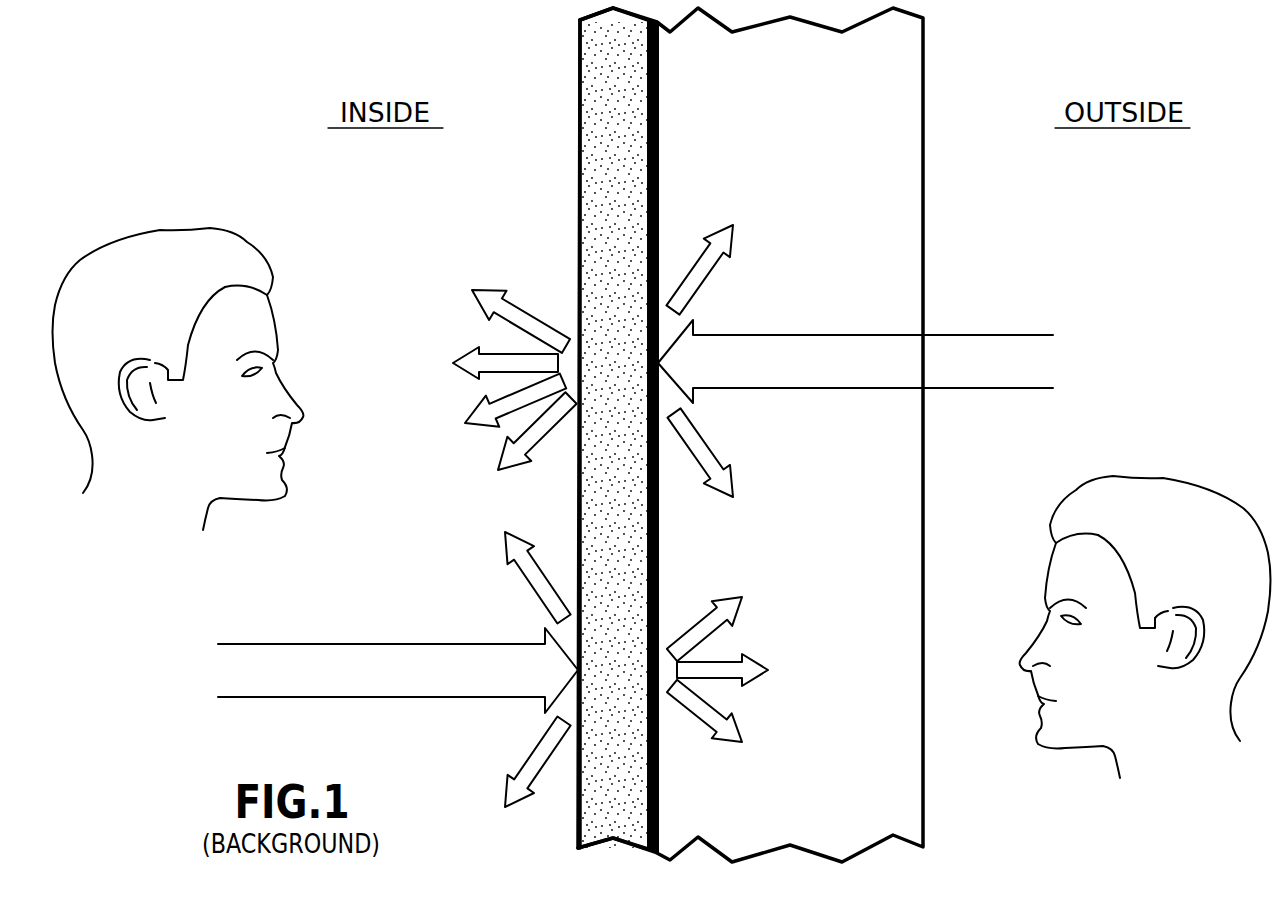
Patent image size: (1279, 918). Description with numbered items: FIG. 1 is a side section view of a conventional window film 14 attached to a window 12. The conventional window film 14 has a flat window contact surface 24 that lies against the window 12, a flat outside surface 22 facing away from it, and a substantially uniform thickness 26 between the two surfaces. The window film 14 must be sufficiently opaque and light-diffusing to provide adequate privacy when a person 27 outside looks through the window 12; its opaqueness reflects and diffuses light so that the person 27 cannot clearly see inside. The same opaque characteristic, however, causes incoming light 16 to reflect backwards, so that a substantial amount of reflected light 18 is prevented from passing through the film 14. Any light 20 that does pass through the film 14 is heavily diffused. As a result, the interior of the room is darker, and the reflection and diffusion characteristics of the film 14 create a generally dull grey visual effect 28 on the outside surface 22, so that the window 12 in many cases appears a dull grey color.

The window 12 is at (910, 163).
The conventional window film 14 is at (607, 72).
The light 16 is at (983, 335).
The reflected light 18 is at (707, 283).
The light that passes through the film 20 is at (490, 287).
The outside surface 22 is at (580, 135).
The window contact surface 24 is at (660, 135).
The thickness 26 is at (580, 190).
The person 27 is at (1176, 478).
The dull grey visual effect 28 is at (163, 228).